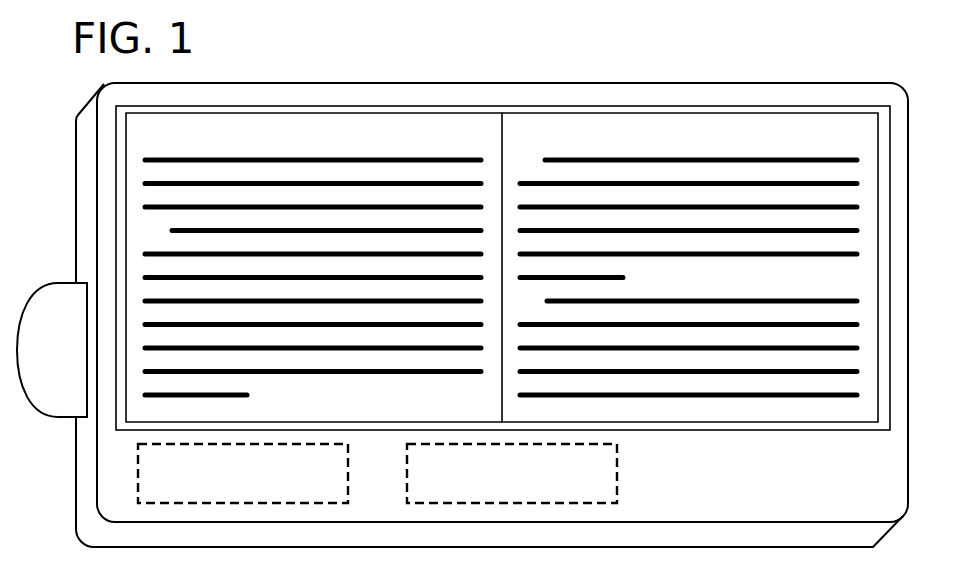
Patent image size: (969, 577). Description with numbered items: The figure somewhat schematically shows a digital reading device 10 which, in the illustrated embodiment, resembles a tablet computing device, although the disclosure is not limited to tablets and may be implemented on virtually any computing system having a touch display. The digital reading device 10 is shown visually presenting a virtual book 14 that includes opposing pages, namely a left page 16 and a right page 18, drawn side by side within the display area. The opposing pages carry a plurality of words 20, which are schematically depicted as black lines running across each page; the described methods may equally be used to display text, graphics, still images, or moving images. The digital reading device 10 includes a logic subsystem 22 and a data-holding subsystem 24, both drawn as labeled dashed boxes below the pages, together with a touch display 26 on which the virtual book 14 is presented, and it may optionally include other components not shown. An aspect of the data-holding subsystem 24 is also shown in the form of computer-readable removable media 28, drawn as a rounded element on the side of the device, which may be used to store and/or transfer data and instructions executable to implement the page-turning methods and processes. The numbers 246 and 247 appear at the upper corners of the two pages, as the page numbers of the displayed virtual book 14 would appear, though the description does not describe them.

The digital reading device 10 is at (333, 50).
The virtual book 14 is at (680, 450).
The left page 16 is at (208, 133).
The right page 18 is at (580, 133).
The words 20 is at (368, 148).
The logic subsystem 22 is at (512, 473).
The data-holding subsystem 24 is at (243, 473).
The touch display 26 is at (795, 431).
The computer-readable removable media 28 is at (50, 410).
The page number 246 is at (156, 135).
The page number 247 is at (846, 135).